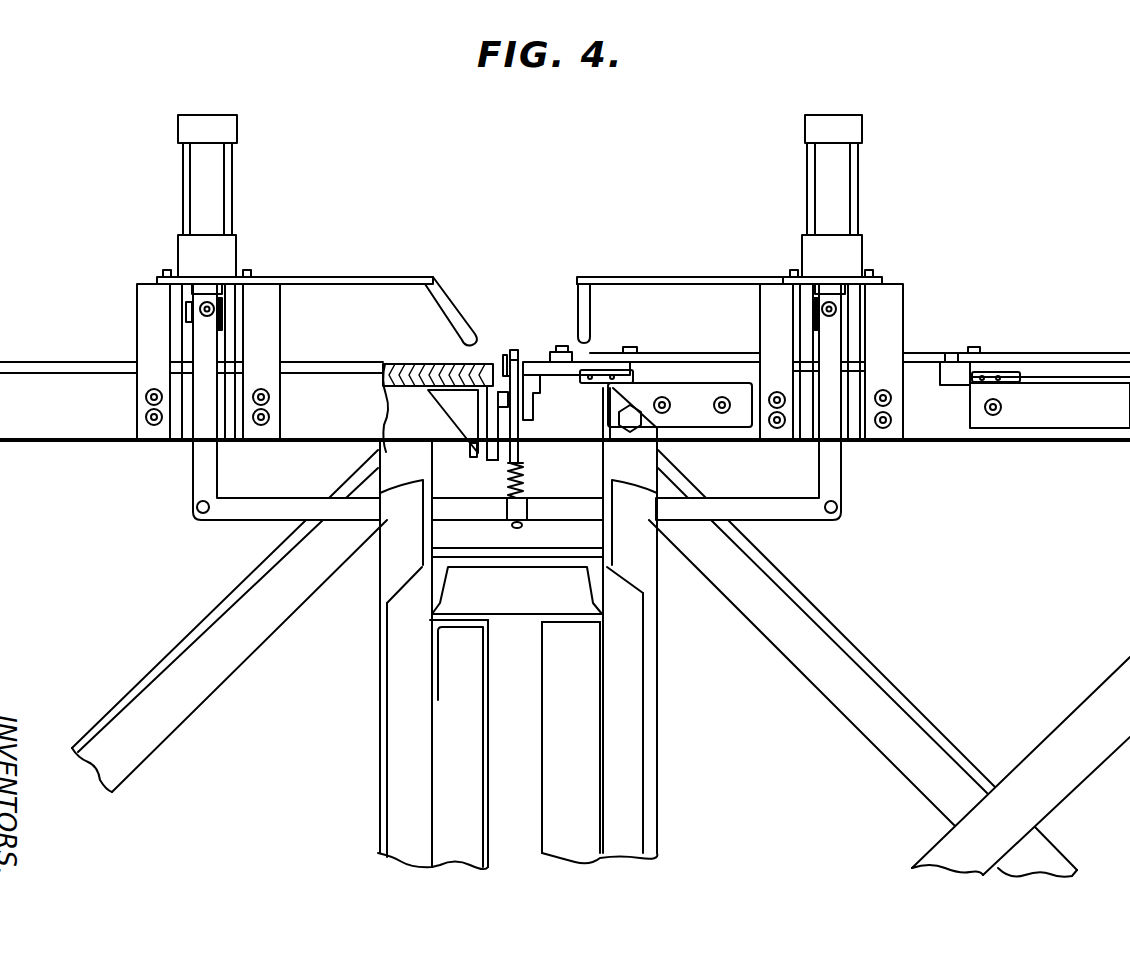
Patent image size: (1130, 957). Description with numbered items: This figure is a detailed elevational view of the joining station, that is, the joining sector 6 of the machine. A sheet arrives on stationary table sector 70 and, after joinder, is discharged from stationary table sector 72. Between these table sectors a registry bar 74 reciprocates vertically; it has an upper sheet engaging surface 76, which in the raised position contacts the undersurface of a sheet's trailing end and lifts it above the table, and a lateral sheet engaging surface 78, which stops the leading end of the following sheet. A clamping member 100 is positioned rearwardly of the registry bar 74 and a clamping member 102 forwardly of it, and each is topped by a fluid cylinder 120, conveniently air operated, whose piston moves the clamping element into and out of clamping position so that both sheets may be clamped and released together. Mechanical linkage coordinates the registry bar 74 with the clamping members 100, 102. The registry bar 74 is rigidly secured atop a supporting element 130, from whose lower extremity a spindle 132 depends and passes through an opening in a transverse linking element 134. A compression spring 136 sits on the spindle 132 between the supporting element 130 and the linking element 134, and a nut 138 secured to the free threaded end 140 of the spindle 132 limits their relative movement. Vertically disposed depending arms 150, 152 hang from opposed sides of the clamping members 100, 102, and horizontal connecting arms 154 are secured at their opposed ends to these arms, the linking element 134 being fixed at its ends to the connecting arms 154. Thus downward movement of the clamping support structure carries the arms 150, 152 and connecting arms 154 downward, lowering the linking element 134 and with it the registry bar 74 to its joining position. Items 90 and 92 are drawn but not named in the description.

The joining sector 6 is at (562, 200).
The stationary table sector 70 is at (68, 344).
The stationary table sector 72 is at (1040, 353).
The registry bar 74 is at (522, 343).
The upper sheet engaging surface 76 is at (508, 358).
The lateral sheet engaging surface 78 is at (503, 355).
The guide bracket 90 is at (591, 320).
The guide plate 92 is at (444, 312).
The clamping member 100 is at (160, 262).
The clamping member 102 is at (910, 268).
The fluid cylinder 120 is at (170, 127).
The supporting element 130 is at (518, 453).
The spindle 132 is at (524, 481).
The linking element 134 is at (528, 506).
The compression spring 136 is at (508, 478).
The nut 138 is at (521, 530).
The free threaded end 140 is at (512, 523).
The depending arm 150 is at (193, 489).
The depending arm 152 is at (843, 493).
The connecting arm 154 is at (258, 520).